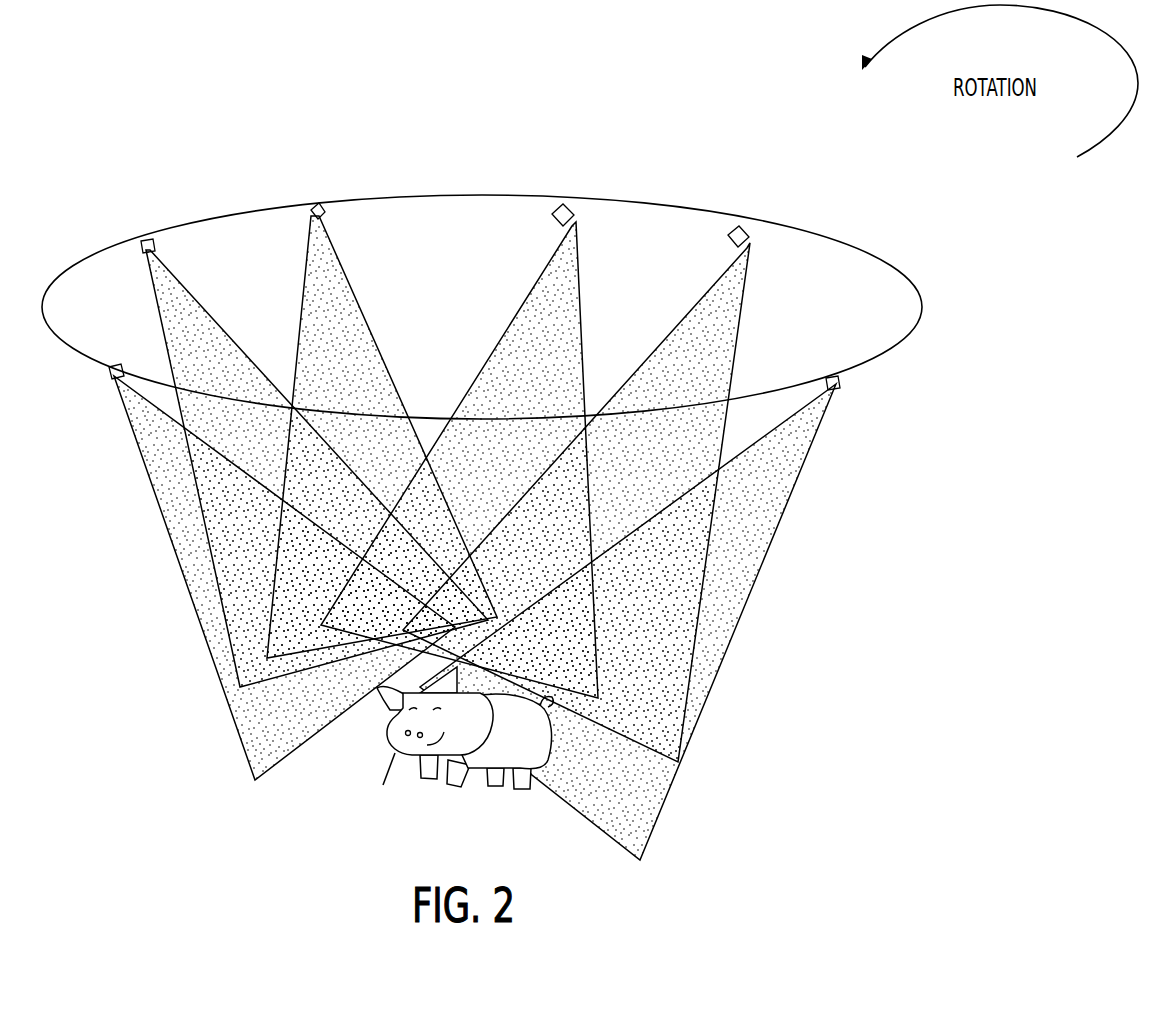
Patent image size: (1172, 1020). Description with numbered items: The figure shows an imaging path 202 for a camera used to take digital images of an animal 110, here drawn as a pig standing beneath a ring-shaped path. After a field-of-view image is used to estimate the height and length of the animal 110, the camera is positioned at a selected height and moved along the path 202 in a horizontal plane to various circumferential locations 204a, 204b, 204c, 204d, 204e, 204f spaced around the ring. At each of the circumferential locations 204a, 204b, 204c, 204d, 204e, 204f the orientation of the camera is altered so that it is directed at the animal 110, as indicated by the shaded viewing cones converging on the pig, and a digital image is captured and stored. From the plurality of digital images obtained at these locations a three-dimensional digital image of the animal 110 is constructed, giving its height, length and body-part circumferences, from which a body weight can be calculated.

The animal 110 is at (463, 741).
The imaging path 202 is at (842, 240).
The circumferential location 204a is at (842, 386).
The circumferential location 204b is at (738, 232).
The circumferential location 204c is at (560, 210).
The circumferential location 204d is at (316, 208).
The circumferential location 204e is at (143, 243).
The circumferential location 204f is at (108, 371).